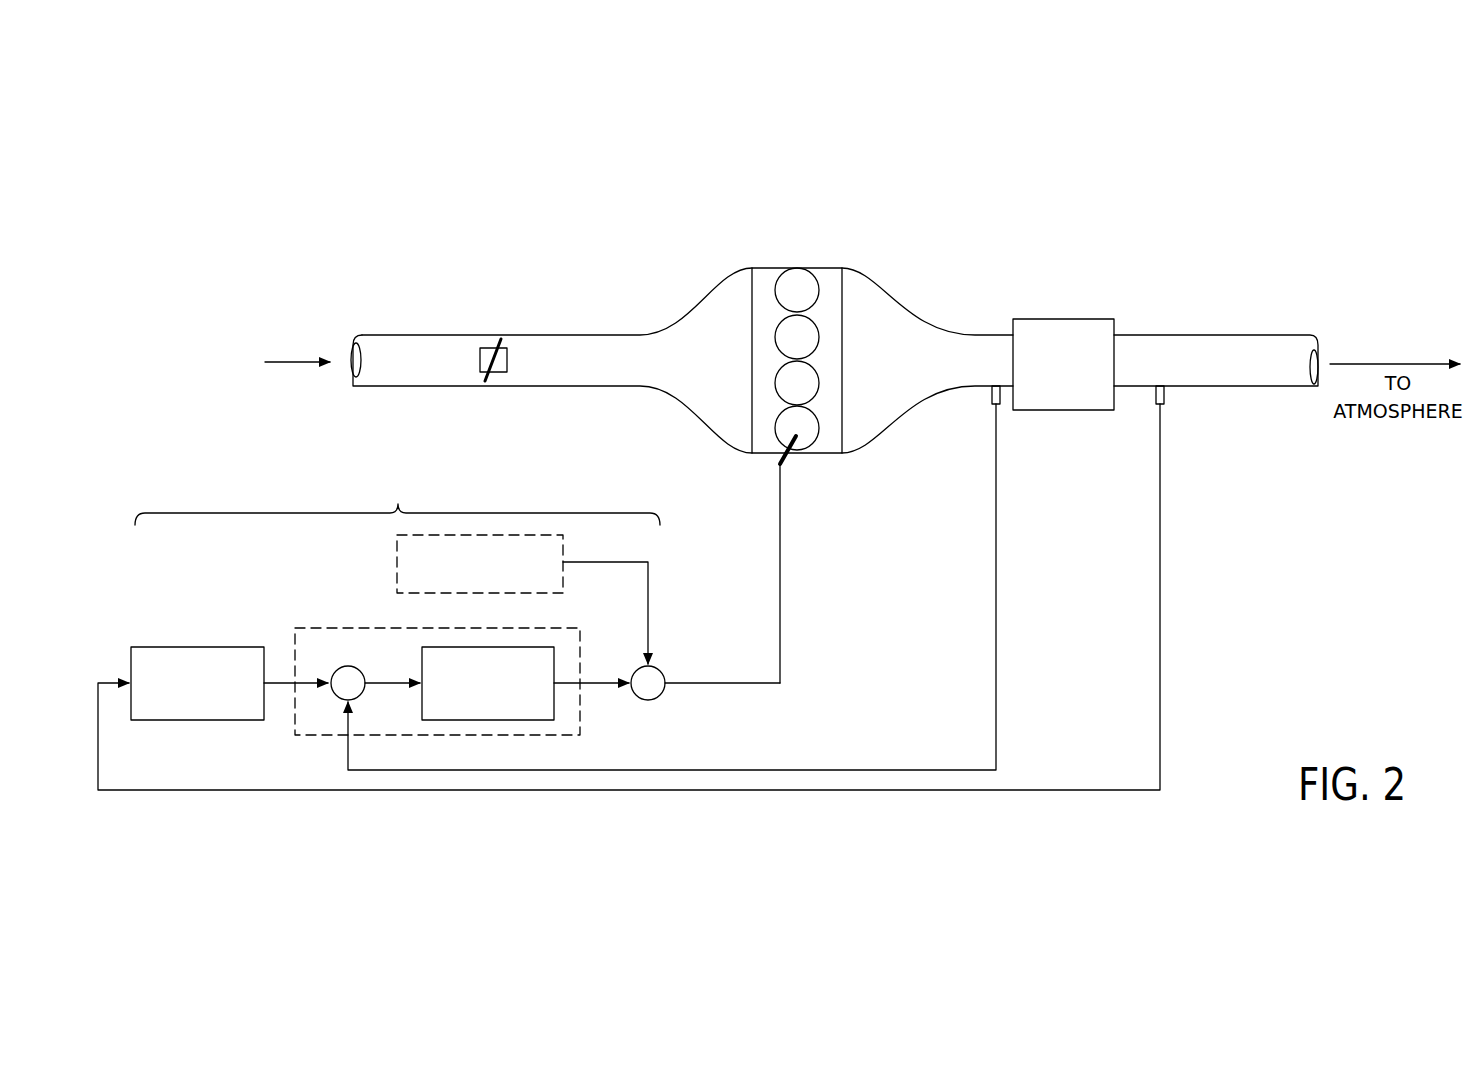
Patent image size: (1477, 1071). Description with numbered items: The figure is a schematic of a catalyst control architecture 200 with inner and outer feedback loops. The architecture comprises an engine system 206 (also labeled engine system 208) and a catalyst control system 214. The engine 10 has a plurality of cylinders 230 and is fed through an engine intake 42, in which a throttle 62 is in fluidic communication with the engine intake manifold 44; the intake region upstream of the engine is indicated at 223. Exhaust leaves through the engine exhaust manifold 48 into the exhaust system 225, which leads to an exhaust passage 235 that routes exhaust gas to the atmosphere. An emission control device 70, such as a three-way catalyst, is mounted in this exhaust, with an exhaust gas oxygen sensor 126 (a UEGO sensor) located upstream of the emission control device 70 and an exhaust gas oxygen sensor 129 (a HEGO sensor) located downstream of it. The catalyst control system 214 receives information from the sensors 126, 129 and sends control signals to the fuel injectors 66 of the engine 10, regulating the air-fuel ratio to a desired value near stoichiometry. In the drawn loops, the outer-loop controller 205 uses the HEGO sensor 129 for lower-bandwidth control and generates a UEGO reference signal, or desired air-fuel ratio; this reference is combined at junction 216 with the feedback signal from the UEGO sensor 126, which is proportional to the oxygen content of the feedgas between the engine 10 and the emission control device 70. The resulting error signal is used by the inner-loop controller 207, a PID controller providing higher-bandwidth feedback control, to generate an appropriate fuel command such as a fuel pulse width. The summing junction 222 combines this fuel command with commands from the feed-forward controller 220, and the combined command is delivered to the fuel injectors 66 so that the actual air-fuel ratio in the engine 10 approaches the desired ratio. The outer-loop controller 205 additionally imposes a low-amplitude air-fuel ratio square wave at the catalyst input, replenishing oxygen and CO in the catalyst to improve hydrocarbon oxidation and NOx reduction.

The catalyst control architecture 200 is at (225, 126).
The engine system 206 is at (300, 258).
The engine intake 42 is at (418, 387).
The throttle 62 is at (508, 366).
The intake manifold 223 is at (683, 298).
The engine intake manifold 44 is at (701, 361).
The engine system 208 is at (838, 320).
The engine 10 is at (811, 346).
The cylinders 230 is at (795, 268).
The exhaust manifold 48 is at (927, 360).
The exhaust system 225 is at (925, 298).
The fuel injectors 66 is at (784, 460).
The emission control device 70 is at (1050, 320).
The exhaust passage 235 is at (1272, 335).
The exhaust gas sensor 126 is at (992, 396).
The exhaust gas sensor 129 is at (1156, 396).
The catalyst control system 214 is at (455, 594).
The outer-loop controller 205 is at (197, 683).
The junction 216 is at (352, 666).
The inner-loop controller 207 is at (488, 683).
The feed-forward controller 220 is at (522, 599).
The summing junction 222 is at (652, 699).